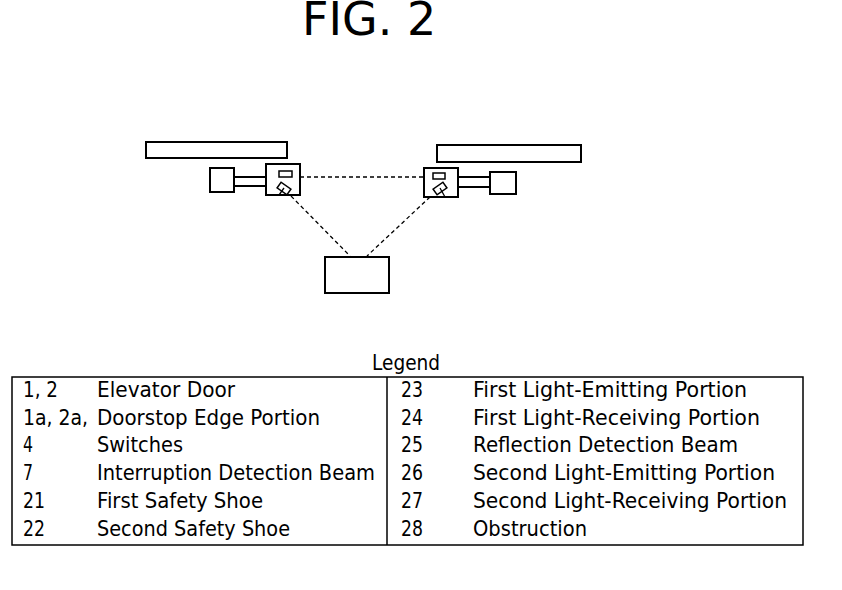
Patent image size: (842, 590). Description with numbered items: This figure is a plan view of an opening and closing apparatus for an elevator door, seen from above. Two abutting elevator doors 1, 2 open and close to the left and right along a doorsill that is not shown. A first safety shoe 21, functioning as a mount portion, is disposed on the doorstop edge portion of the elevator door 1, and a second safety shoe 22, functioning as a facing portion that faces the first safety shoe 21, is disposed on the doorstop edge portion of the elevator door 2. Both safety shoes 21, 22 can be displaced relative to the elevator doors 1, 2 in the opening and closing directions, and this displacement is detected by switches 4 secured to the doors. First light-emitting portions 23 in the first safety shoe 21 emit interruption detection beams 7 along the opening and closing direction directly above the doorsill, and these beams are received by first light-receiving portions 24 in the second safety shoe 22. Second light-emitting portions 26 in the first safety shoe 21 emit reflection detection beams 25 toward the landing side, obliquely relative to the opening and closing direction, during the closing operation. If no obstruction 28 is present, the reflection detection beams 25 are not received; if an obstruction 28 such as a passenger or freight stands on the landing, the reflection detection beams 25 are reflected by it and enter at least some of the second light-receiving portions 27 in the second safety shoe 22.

The elevator door 1 is at (193, 142).
The elevator door 2 is at (538, 145).
The switches 4 is at (209, 180).
The interruption detection beams 7 is at (361, 175).
The first safety shoe 21 is at (294, 163).
The second safety shoe 22 is at (431, 167).
The first light-emitting portions 23 is at (284, 170).
The first light-receiving portions 24 is at (444, 171).
The reflection detection beams 25 is at (306, 208).
The second light-emitting portions 26 is at (275, 197).
The second light-receiving portions 27 is at (448, 196).
The obstruction 28 is at (358, 294).